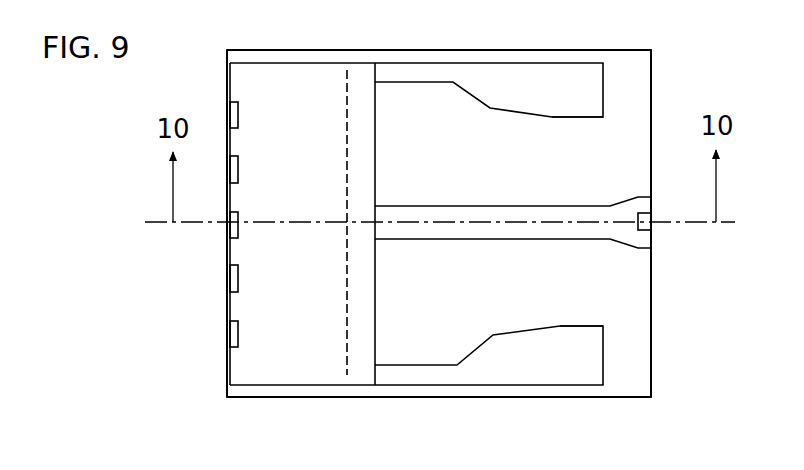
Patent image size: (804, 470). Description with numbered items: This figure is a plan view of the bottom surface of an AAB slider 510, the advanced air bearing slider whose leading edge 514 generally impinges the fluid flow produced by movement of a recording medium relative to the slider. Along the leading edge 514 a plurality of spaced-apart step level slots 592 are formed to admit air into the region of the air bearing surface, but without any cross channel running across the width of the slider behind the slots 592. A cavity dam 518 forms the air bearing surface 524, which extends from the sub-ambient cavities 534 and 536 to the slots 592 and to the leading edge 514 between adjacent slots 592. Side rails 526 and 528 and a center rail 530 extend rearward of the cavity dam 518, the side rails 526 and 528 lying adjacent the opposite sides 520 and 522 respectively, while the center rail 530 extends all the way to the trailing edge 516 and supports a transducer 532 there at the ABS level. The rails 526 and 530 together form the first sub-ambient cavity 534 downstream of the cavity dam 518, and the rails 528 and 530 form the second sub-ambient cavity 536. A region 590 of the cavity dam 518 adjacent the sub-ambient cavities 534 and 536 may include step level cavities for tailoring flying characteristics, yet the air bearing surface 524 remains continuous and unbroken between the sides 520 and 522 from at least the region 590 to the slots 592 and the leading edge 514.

The AAB slider 510 is at (132, 159).
The leading edge 514 is at (228, 378).
The trailing edge 516 is at (653, 300).
The cavity dam 518 is at (229, 355).
The side 520 is at (408, 50).
The side 522 is at (460, 398).
The air bearing surface 524 is at (305, 80).
The side rail 526 is at (552, 62).
The side rail 528 is at (587, 372).
The center rail 530 is at (585, 206).
The transducer 532 is at (652, 226).
The first sub-ambient cavity 534 is at (455, 108).
The second sub-ambient cavity 536 is at (505, 320).
The region of cavity dam 590 is at (362, 368).
The step level slots 592 is at (228, 112).